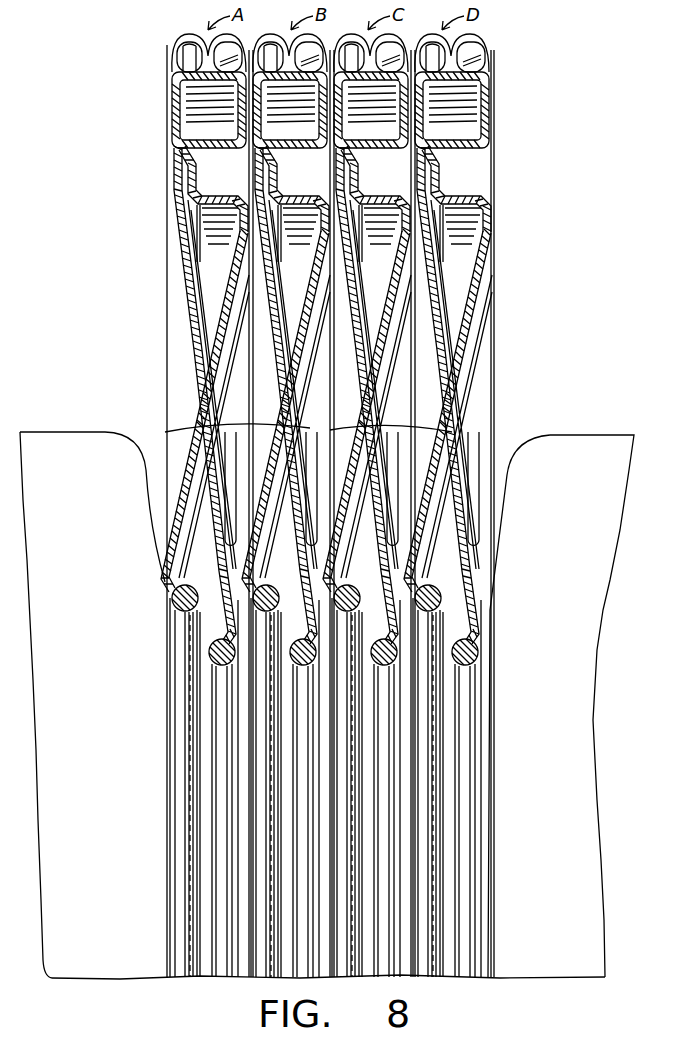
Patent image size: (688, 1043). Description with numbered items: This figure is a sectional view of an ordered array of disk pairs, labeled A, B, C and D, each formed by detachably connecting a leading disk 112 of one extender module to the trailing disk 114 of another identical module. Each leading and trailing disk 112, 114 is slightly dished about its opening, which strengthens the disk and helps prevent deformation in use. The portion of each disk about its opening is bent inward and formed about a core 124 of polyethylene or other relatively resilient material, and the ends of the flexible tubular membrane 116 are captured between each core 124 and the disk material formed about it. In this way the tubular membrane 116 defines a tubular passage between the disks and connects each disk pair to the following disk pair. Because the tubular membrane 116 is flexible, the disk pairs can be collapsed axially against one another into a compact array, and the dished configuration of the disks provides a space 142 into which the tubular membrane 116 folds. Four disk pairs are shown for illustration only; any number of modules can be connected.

The leading disk 112 is at (302, 189).
The trailing disk 114 is at (345, 410).
The tubular membrane 116 is at (327, 694).
The core 124 is at (320, 625).
The space 142 is at (352, 471).